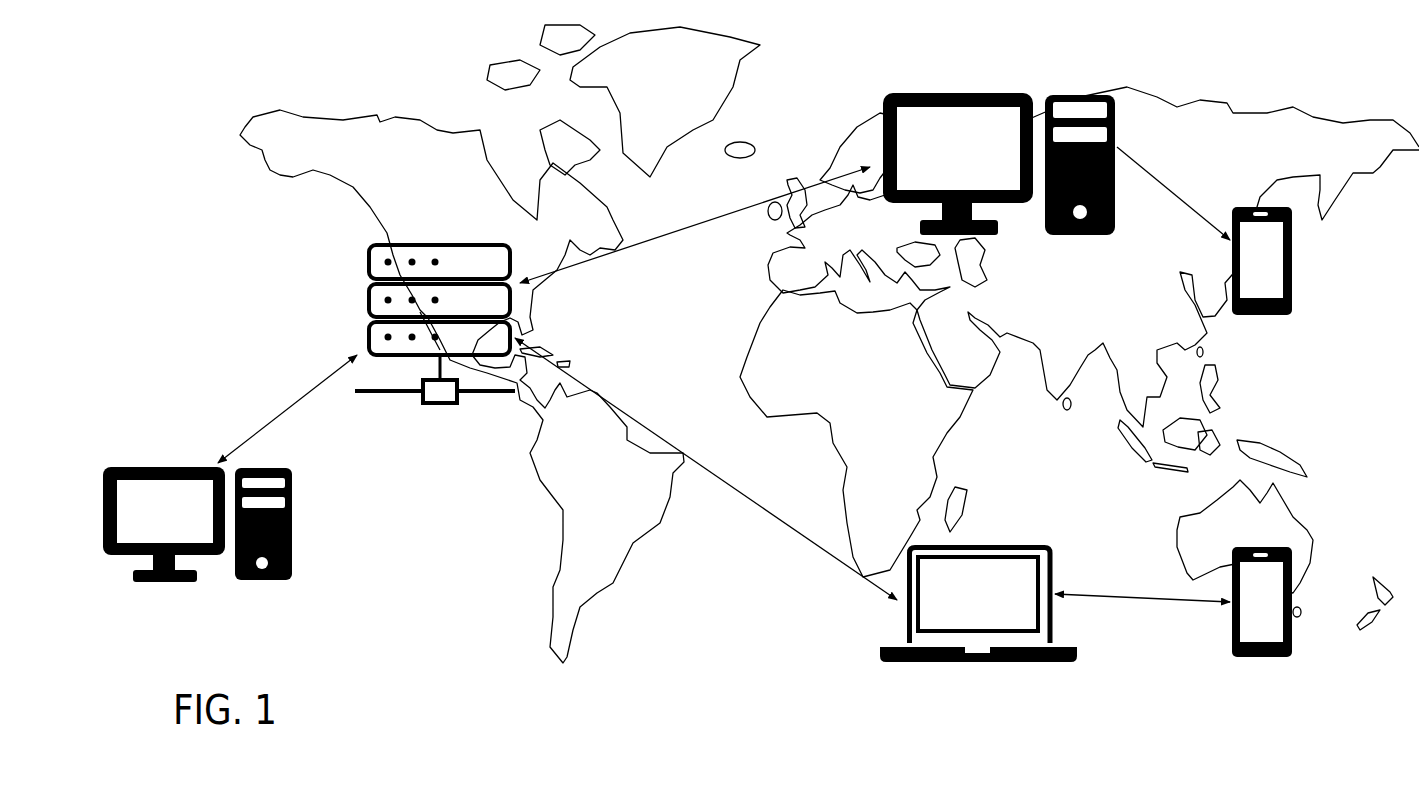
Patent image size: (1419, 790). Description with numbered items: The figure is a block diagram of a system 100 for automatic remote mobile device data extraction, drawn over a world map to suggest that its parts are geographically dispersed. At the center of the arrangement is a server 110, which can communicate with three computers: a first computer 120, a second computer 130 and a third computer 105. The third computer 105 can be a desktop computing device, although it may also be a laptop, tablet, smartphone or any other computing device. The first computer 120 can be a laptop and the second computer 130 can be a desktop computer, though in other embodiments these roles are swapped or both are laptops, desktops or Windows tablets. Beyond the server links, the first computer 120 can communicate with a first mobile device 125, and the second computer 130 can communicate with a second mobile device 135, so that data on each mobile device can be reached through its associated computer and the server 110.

The system 100 is at (160, 163).
The third computer 105 is at (190, 468).
The server 110 is at (367, 298).
The first computer 120 is at (907, 622).
The first mobile device 125 is at (1292, 635).
The second computer 130 is at (880, 108).
The second mobile device 135 is at (1292, 255).